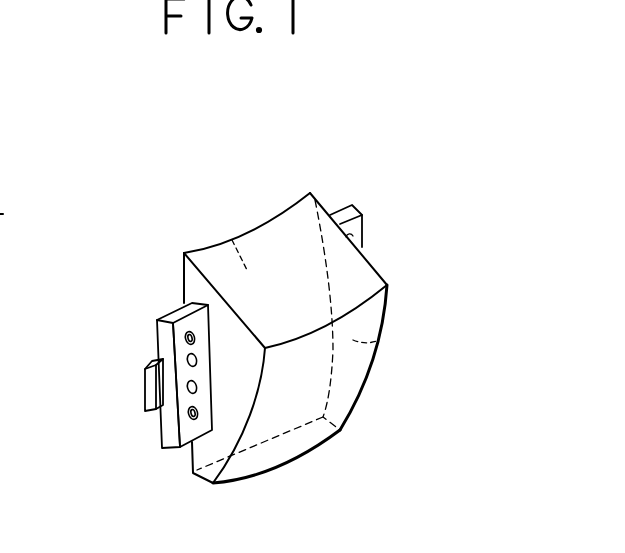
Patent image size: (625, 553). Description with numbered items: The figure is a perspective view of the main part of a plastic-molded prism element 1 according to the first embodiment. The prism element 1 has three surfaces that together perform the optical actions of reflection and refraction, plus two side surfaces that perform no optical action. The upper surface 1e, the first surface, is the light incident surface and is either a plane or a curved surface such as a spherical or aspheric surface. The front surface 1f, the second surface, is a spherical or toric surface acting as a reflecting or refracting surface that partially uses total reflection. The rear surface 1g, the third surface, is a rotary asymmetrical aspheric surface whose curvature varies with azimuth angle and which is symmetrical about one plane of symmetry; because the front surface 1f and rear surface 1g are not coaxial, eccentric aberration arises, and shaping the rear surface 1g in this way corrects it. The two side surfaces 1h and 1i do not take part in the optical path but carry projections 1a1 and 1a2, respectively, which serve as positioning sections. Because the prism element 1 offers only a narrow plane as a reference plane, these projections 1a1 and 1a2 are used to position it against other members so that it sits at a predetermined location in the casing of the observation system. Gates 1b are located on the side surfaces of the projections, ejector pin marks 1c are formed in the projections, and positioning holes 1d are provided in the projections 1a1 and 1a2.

The prism element 1 is at (308, 175).
The projection 1a1 is at (155, 333).
The projection 1a2 is at (353, 225).
The gate 1b is at (143, 383).
The ejector pin mark 1c is at (190, 414).
The positioning hole 1d is at (190, 390).
The upper surface (first surface) 1e is at (360, 277).
The front surface (second surface) 1f is at (233, 241).
The rear surface (third surface) 1g is at (350, 390).
The side surface 1h is at (209, 457).
The side surface 1i is at (377, 342).